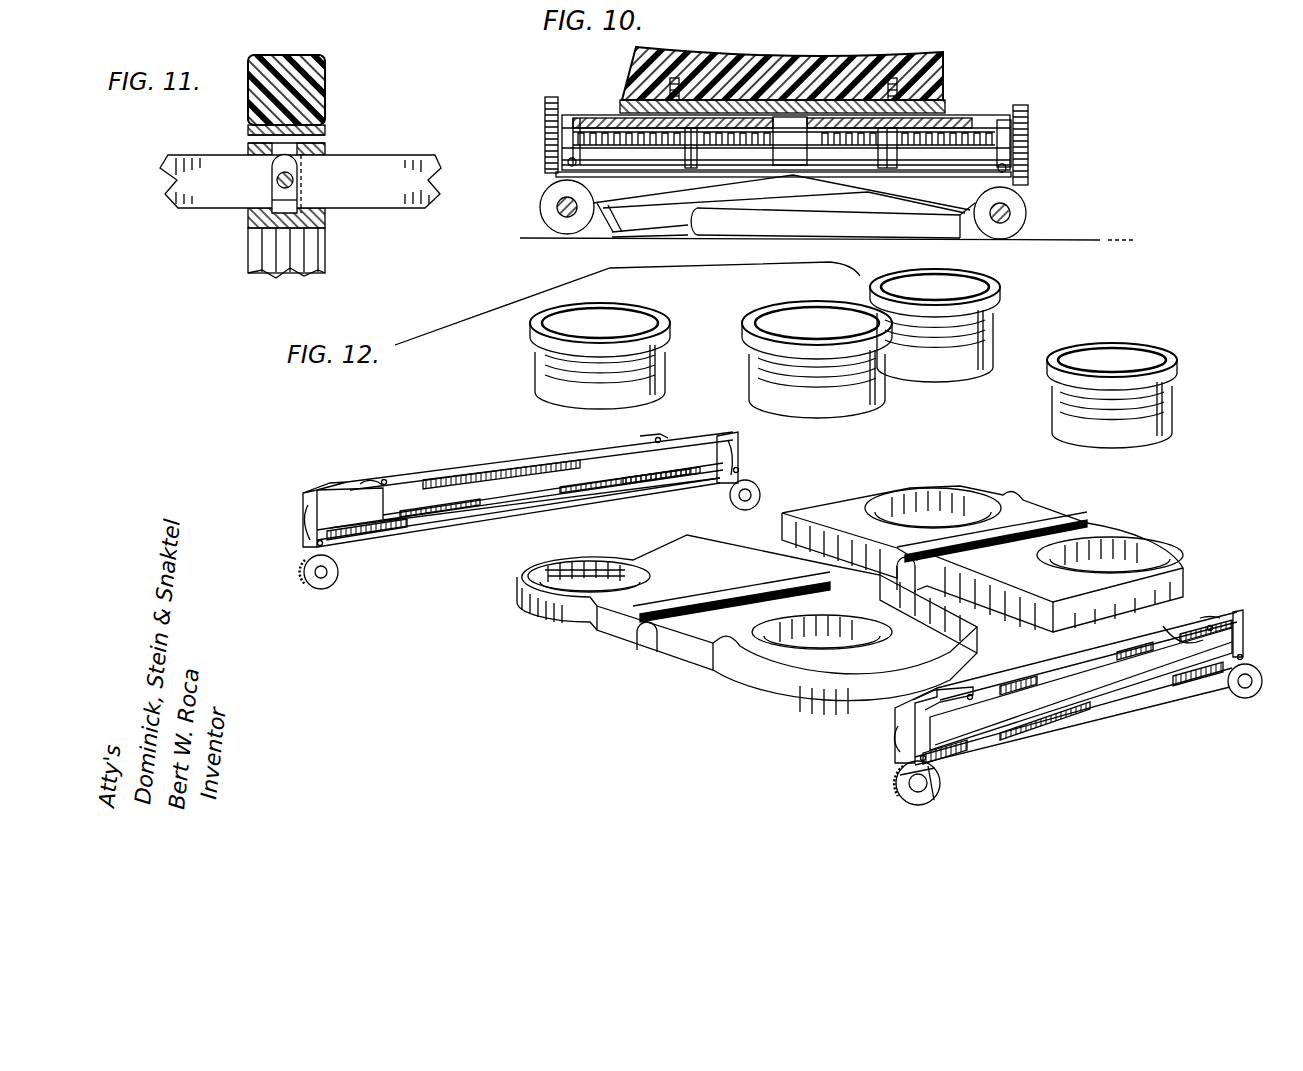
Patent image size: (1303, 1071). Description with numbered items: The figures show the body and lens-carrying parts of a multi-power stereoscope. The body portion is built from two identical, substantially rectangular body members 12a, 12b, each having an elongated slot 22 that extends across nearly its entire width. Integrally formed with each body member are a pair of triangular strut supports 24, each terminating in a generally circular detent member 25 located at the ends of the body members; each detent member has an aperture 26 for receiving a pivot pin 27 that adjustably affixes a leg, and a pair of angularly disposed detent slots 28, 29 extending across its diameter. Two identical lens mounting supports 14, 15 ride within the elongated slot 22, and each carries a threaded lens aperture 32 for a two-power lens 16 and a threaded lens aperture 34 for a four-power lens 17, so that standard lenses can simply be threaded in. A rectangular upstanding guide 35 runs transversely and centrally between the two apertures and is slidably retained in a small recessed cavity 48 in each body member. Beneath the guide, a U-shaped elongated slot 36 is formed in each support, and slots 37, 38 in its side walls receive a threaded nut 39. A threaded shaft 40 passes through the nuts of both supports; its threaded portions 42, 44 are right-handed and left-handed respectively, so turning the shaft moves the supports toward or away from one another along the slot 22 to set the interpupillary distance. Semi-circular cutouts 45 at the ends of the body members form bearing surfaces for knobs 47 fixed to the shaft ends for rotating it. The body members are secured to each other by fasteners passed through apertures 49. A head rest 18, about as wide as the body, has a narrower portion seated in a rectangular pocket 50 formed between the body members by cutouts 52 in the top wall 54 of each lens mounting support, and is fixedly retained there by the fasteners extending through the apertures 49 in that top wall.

In FIG. 12, the body member 12a is at (478, 458).
In FIG. 12, the body member 12b is at (1088, 712).
In FIG. 12, the lens mounting support 14 is at (595, 630).
In FIG. 12, the lens mounting support 15 is at (840, 505).
In FIG. 12, the two-power lens 16 is at (655, 315).
In FIG. 12, the four-power lens 17 is at (770, 316).
In FIG. 10, the head rest 18 is at (788, 50).
In FIG. 11, the head rest 18 is at (330, 76).
In FIG. 12, the elongated slot 22 is at (347, 495).
In FIG. 12, the strut support 24 is at (385, 556).
In FIG. 12, the detent member 25 is at (330, 592).
In FIG. 12, the aperture 26 is at (310, 586).
In FIG. 10, the pivot pin 27 is at (545, 210).
In FIG. 12, the detent slot 28 is at (896, 795).
In FIG. 12, the detent slot 29 is at (940, 796).
In FIG. 12, the threaded lens aperture 32 is at (518, 575).
In FIG. 12, the threaded lens aperture 34 is at (770, 660).
In FIG. 12, the upstanding guide 35 is at (695, 640).
In FIG. 12, the U-shaped elongated slot 36 is at (642, 650).
In FIG. 11, the slot 37 is at (300, 186).
In FIG. 11, the slot 38 is at (268, 172).
In FIG. 10, the threaded nut 39 is at (693, 168).
In FIG. 11, the threaded nut 39 is at (272, 190).
In FIG. 10, the threaded shaft 40 is at (625, 148).
In FIG. 10, the threaded portion 42 is at (940, 158).
In FIG. 10, the threaded portion 44 is at (610, 120).
In FIG. 12, the semi-circular cutout 45 is at (308, 516).
In FIG. 10, the knob 47 is at (543, 112).
In FIG. 12, the recessed cavity 48 is at (700, 470).
In FIG. 12, the aperture 49 is at (384, 479).
In FIG. 10, the pocket 50 is at (630, 102).
In FIG. 11, the pocket 50 is at (320, 132).
In FIG. 11, the cutout 52 is at (250, 150).
In FIG. 12, the cutout 52 is at (695, 436).
In FIG. 12, the top wall 54 is at (500, 466).